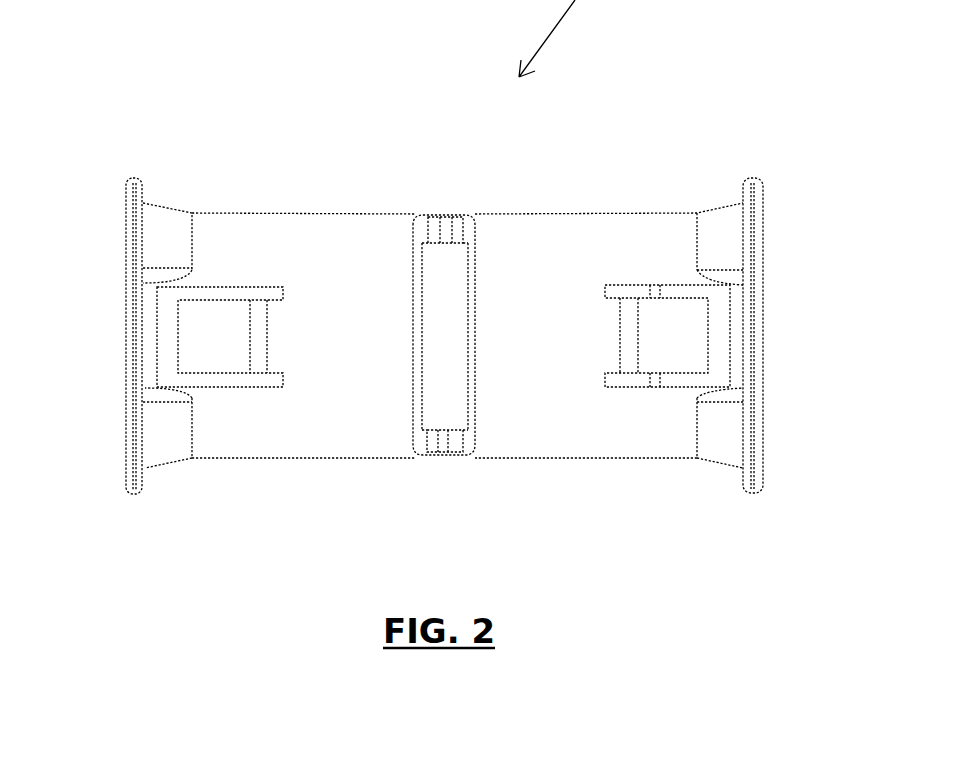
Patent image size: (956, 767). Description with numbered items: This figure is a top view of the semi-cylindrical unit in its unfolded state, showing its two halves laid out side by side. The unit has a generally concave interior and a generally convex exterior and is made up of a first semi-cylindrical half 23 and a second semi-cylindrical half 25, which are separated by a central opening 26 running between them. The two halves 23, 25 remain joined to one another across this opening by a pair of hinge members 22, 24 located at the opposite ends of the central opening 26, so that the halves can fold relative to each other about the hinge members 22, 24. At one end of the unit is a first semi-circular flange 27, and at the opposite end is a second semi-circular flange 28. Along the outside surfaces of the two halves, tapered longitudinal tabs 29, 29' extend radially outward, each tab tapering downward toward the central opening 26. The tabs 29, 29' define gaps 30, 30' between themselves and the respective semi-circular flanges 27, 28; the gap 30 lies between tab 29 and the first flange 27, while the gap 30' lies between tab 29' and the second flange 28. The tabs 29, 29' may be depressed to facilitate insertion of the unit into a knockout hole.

The hinge member 22 is at (452, 230).
The first semi-cylindrical half 23 is at (338, 270).
The hinge member 24 is at (437, 448).
The second semi-cylindrical half 25 is at (533, 270).
The central opening 26 is at (447, 338).
The first semi-circular flange 27 is at (139, 183).
The second semi-circular flange 28 is at (761, 188).
The tapered longitudinal tab 29 is at (155, 337).
The tapered longitudinal tab 29' is at (732, 336).
The gap 30 is at (103, 336).
The gap 30' is at (793, 336).